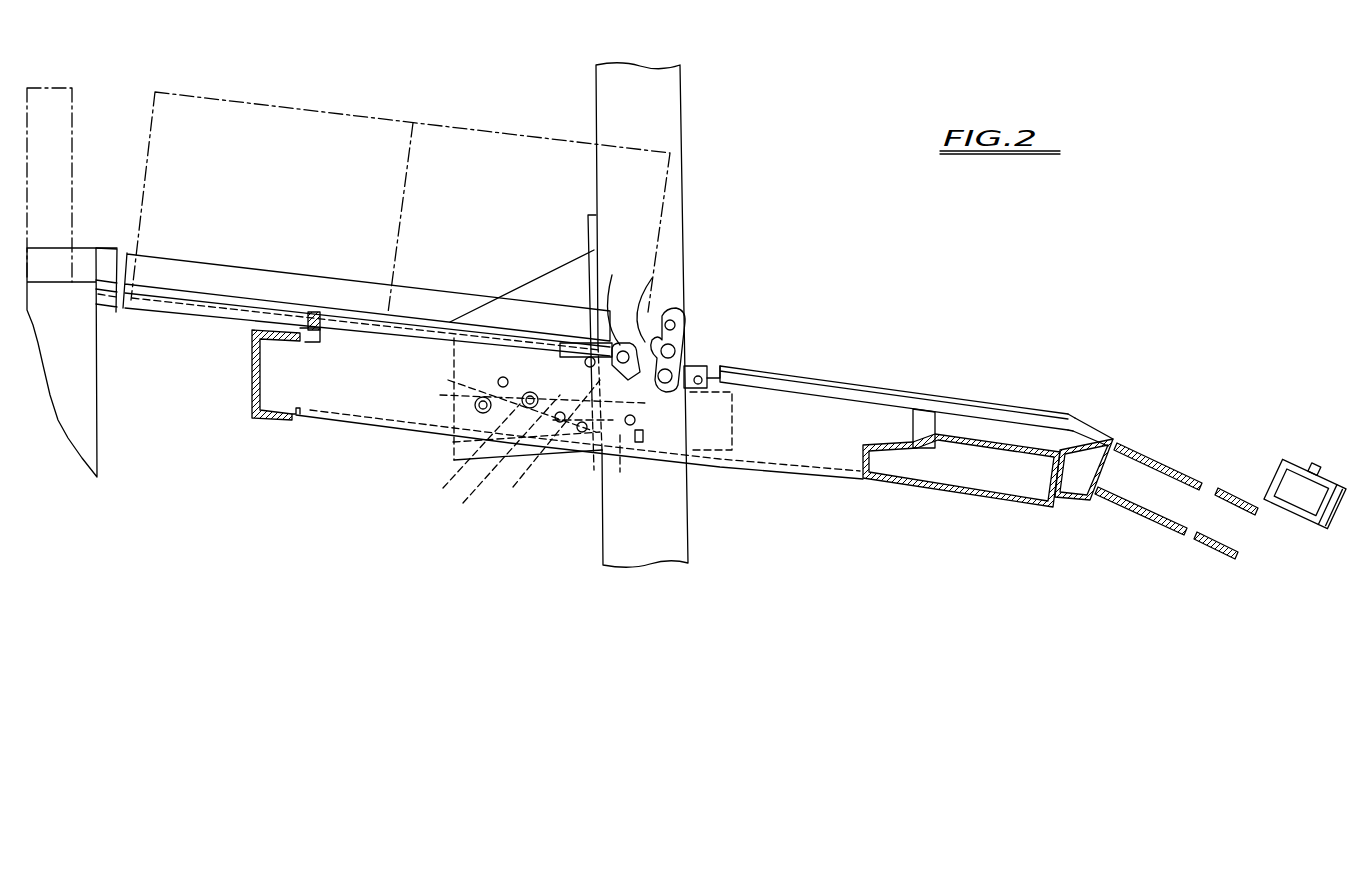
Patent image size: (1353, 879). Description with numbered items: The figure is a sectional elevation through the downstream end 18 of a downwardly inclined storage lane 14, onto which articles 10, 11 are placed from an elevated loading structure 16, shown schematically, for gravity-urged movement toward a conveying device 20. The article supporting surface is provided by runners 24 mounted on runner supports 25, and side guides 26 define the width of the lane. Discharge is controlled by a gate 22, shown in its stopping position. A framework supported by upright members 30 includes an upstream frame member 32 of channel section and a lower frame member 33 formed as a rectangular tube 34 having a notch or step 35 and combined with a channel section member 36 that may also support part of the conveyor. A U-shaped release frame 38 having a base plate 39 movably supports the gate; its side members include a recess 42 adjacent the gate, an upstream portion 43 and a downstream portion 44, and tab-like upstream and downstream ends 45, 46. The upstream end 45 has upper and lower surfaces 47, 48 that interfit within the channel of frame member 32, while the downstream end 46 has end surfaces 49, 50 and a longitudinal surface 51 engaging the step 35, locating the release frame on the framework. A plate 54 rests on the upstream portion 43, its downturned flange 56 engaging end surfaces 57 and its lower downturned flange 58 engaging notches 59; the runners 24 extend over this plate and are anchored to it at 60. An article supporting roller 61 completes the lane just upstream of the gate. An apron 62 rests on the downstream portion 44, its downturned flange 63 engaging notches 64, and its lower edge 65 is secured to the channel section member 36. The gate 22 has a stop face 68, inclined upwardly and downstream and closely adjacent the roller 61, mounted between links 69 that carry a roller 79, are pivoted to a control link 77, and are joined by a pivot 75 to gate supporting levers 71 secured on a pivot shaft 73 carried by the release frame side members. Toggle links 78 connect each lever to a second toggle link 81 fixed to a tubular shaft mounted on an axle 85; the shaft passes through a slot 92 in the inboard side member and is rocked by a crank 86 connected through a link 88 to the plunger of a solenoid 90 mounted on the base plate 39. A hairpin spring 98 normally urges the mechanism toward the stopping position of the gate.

The article 10 is at (468, 126).
The article 11 is at (370, 110).
The storage lane 14 is at (258, 292).
The loading structure 16 is at (108, 455).
The downstream end 18 is at (810, 308).
The conveying device 20 is at (1200, 541).
The gate 22 is at (703, 328).
The runners 24 is at (205, 292).
The runner supports 25 is at (172, 318).
The side guides 26 is at (158, 260).
The upright members 30 is at (683, 129).
The upstream frame member 32 is at (280, 422).
The lower frame member 33 is at (952, 498).
The rectangular tube 34 is at (1008, 502).
The notch or step 35 is at (907, 452).
The channel section member 36 is at (1088, 498).
The release frame 38 is at (798, 486).
The base plate 39 is at (392, 433).
The recess 42 is at (667, 408).
The upstream portion 43 is at (398, 393).
The downstream portion 44 is at (801, 449).
The upstream end 45 is at (265, 370).
The downstream end 46 is at (920, 410).
The upper longitudinally extending surface 47 is at (296, 336).
The lower longitudinally extending surface 48 is at (276, 416).
The end surface 49 is at (938, 414).
The end surface 50 is at (862, 454).
The longitudinally extending surface 51 is at (898, 442).
The plate 54 is at (418, 328).
The downturned flange 56 is at (338, 318).
The end surfaces 57 is at (322, 340).
The downturned flange 58 is at (614, 318).
The notches 59 is at (590, 360).
The runner anchorage 60 is at (578, 344).
The article supporting roller 61 is at (618, 330).
The apron 62 is at (812, 386).
The downturned flange 63 is at (720, 363).
The notches 64 is at (724, 376).
The lower edge 65 is at (1095, 428).
The stop face 68 is at (660, 316).
The links 69 is at (692, 364).
The gate supporting levers 71 is at (596, 460).
The pivot shaft 73 is at (580, 342).
The pivot 75 is at (685, 342).
The control link 77 is at (702, 396).
The toggle links 78 is at (546, 444).
The roller 79 is at (672, 343).
The second toggle link 81 is at (468, 453).
The axle 85 is at (498, 388).
The crank 86 is at (447, 394).
The link 88 is at (622, 467).
The solenoid 90 is at (736, 421).
The slot 92 is at (500, 308).
The hairpin spring 98 is at (501, 465).